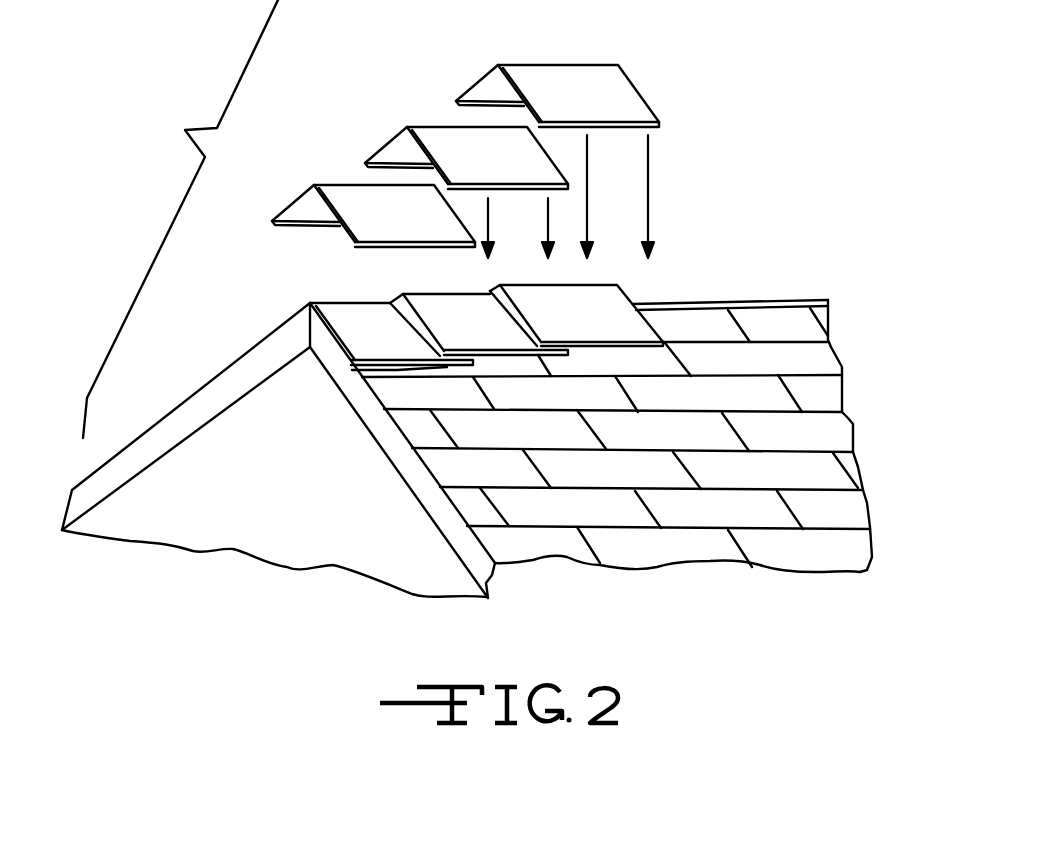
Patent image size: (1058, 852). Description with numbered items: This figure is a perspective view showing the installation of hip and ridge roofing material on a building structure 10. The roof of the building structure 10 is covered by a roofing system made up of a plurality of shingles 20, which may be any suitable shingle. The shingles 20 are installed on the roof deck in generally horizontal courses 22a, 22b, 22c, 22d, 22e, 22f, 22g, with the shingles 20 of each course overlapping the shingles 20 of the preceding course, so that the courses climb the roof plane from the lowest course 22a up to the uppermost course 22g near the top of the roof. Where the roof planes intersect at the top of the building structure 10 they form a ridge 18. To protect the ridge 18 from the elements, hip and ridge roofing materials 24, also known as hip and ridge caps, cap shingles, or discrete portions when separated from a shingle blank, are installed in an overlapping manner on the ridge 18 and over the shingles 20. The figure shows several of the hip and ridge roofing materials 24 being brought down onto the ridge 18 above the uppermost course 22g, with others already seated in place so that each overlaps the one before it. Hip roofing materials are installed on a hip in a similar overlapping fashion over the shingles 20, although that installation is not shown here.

The building structure 10 is at (278, 299).
The ridge 18 is at (773, 300).
The shingles 20 is at (748, 513).
The course 22a is at (848, 553).
The course 22b is at (848, 513).
The course 22c is at (837, 475).
The course 22d is at (847, 438).
The course 22e is at (830, 395).
The course 22f is at (823, 360).
The course 22g is at (812, 327).
The hip and ridge roofing materials 24 is at (477, 80).